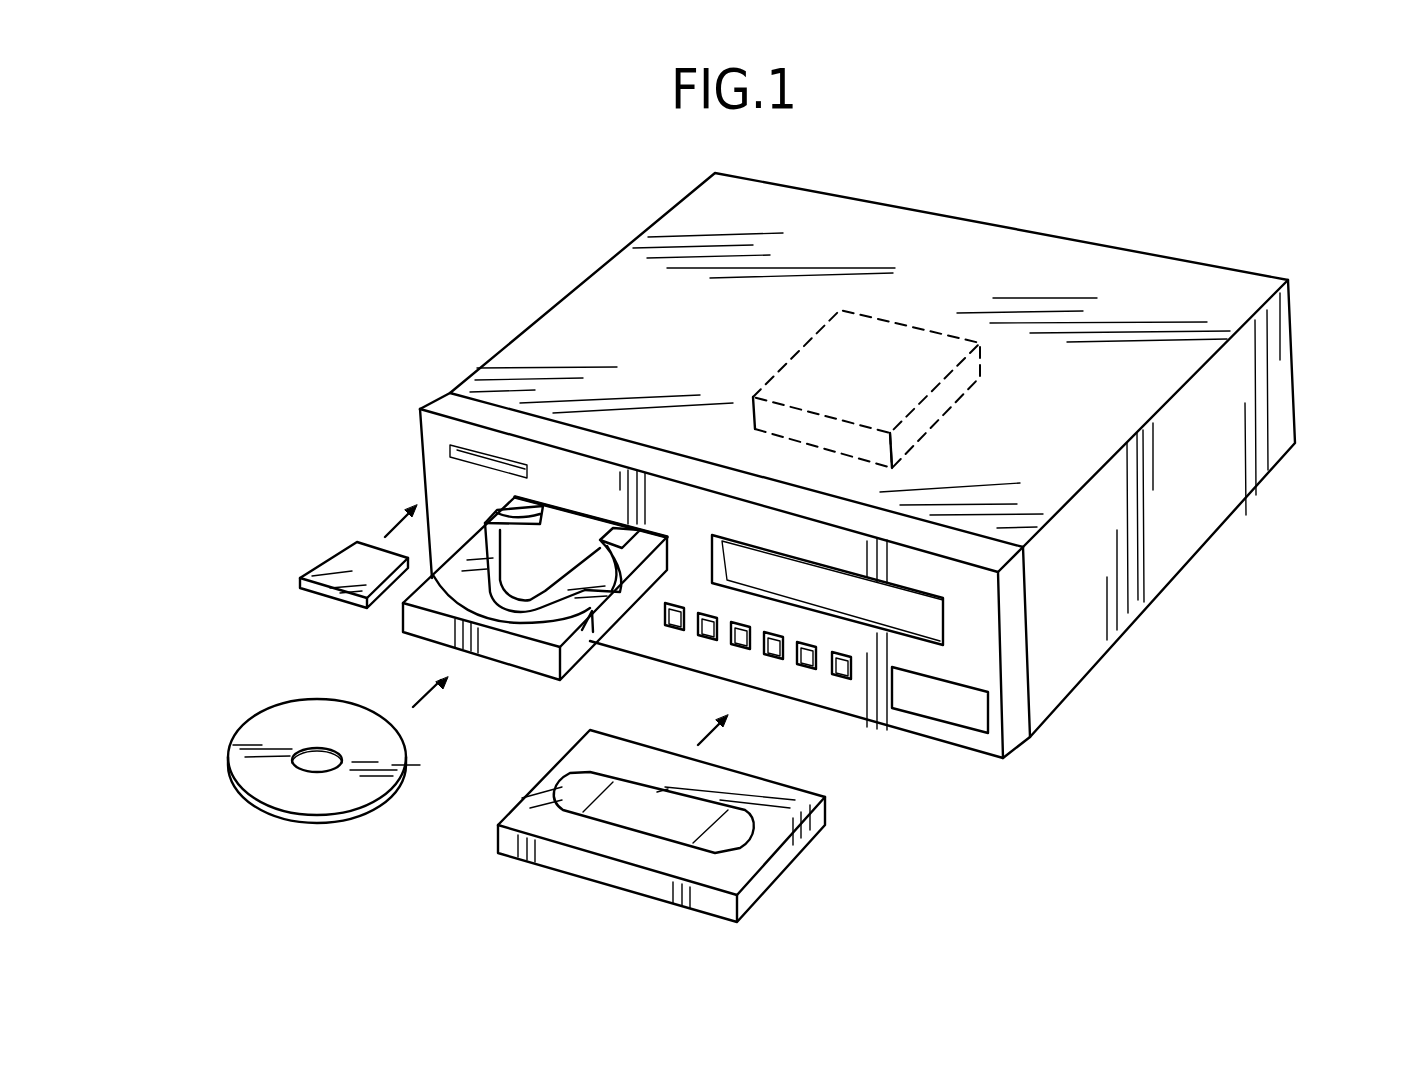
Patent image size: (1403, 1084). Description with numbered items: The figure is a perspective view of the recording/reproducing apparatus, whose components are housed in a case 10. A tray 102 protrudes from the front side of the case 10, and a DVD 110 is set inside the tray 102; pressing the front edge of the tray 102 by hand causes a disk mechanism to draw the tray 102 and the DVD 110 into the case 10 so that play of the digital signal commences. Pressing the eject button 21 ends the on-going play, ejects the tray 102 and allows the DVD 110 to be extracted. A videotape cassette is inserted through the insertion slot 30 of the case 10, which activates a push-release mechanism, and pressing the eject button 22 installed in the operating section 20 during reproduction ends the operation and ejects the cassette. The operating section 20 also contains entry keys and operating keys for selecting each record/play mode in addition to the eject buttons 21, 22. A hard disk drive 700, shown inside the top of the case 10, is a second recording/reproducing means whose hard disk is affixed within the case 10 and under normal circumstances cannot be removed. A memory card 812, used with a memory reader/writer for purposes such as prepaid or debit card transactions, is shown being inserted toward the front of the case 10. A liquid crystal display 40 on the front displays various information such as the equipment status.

The case 10 is at (1113, 258).
The operating section 20 is at (828, 700).
The eject button 21 is at (668, 633).
The eject button 22 is at (707, 637).
The insertion slot 30 is at (933, 613).
The liquid crystal display 40 is at (975, 735).
The tray 102 is at (545, 617).
The DVD 110 is at (260, 722).
The hard disk drive 700 is at (902, 342).
The memory card 812 is at (347, 553).